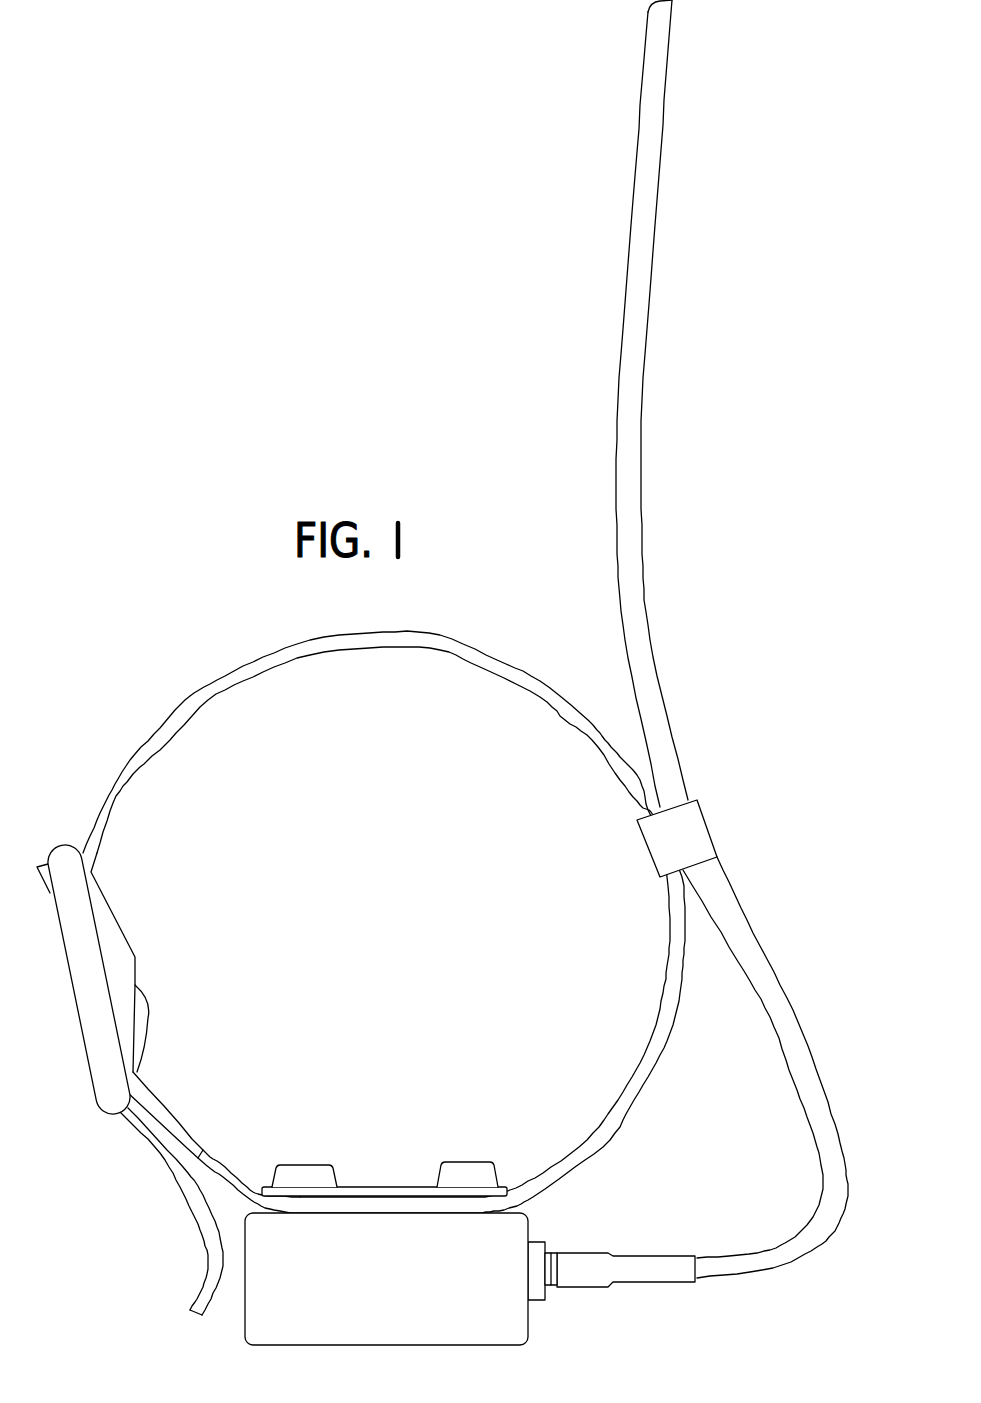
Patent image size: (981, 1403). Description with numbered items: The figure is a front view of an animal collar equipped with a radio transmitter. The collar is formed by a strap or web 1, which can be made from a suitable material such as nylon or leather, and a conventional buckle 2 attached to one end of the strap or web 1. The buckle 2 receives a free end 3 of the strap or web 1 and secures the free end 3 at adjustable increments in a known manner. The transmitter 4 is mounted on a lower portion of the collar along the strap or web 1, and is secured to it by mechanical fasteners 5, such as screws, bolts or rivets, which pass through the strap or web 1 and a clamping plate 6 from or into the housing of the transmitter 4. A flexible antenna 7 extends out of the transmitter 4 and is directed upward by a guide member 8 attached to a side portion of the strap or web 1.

The strap or web 1 is at (208, 700).
The buckle 2 is at (63, 993).
The free end 3 is at (185, 1195).
The transmitter 4 is at (380, 1289).
The mechanical fasteners 5 is at (331, 1165).
The clamping plate 6 is at (385, 1183).
The flexible antenna 7 is at (790, 1013).
The guide member 8 is at (712, 832).